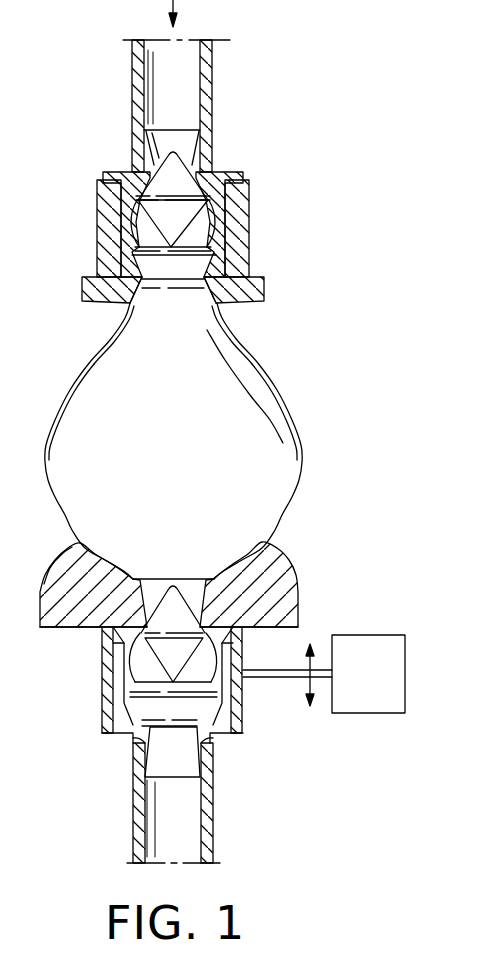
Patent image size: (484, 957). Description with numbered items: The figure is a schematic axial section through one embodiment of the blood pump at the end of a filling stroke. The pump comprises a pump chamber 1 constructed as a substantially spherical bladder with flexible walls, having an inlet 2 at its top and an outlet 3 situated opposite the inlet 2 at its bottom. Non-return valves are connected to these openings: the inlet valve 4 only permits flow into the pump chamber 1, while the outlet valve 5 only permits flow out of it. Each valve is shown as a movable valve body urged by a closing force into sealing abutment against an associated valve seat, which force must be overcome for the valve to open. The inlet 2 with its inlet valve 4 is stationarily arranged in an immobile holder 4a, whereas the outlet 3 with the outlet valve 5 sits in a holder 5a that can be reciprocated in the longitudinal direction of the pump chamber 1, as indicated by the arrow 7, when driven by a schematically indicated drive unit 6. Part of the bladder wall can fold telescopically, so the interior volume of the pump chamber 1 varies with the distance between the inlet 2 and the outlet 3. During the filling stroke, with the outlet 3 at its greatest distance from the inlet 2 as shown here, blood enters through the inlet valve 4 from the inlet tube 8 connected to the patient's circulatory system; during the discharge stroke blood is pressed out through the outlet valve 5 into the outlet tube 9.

The pump chamber 1 is at (273, 378).
The inlet 2 is at (212, 312).
The outlet 3 is at (167, 573).
The inlet valve 4 is at (213, 173).
The immobile holder 4a is at (247, 233).
The outlet valve 5 is at (140, 650).
The holder 5a is at (243, 707).
The drive unit 6 is at (363, 642).
The arrow 7 is at (307, 668).
The inlet tube 8 is at (212, 97).
The outlet tube 9 is at (213, 802).